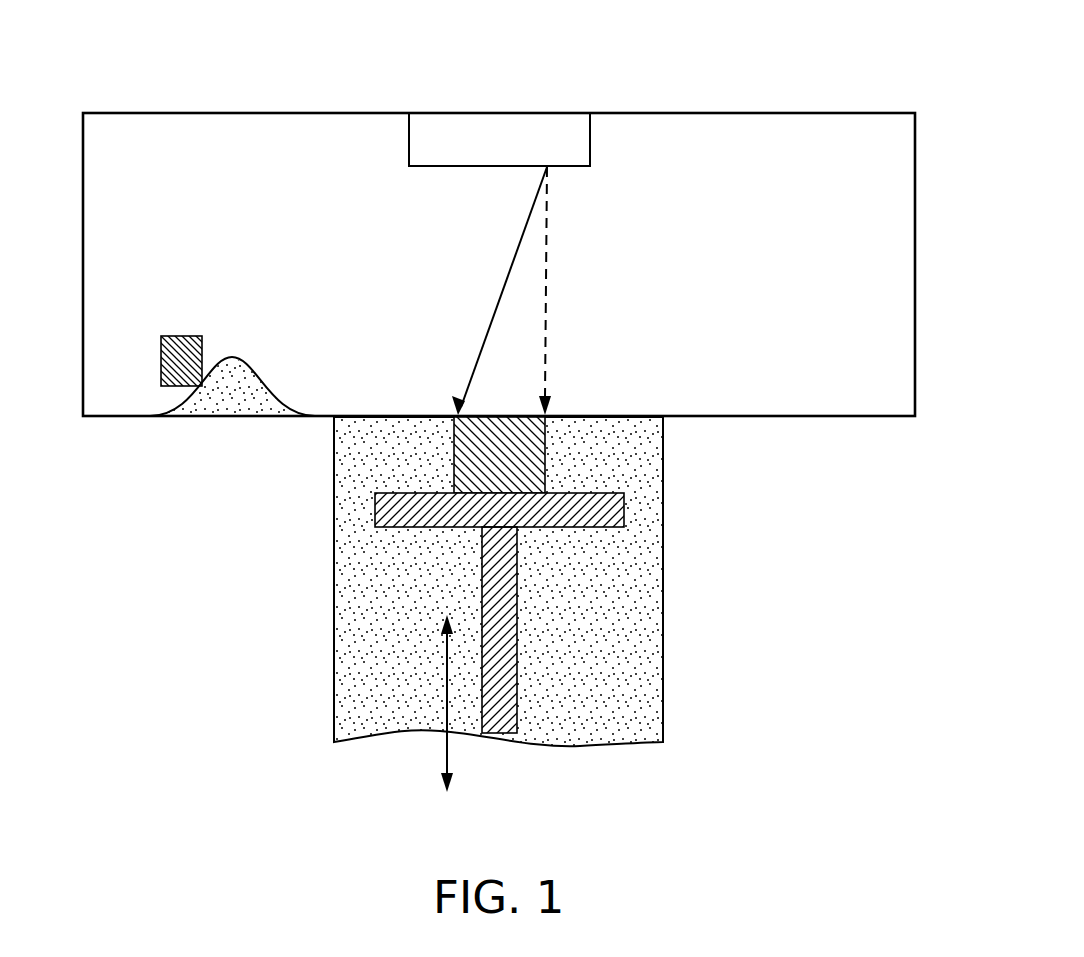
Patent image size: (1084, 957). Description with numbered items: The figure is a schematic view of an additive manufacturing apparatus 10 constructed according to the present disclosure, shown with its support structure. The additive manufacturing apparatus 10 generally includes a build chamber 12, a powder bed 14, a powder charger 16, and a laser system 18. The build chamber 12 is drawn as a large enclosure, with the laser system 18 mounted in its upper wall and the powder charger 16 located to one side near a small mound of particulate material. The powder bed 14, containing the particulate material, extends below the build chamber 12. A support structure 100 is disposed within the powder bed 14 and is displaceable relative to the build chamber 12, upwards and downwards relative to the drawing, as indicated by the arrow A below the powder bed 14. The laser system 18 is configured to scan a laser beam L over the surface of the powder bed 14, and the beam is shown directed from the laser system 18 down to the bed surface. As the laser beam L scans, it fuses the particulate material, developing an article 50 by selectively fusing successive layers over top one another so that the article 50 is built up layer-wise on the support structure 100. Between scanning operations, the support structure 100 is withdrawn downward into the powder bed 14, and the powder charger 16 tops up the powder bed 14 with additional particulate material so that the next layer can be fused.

The additive manufacturing apparatus 10 is at (183, 583).
The build chamber 12 is at (765, 277).
The powder bed 14 is at (608, 639).
The powder charger 16 is at (180, 353).
The laser system 18 is at (514, 136).
The article 50 is at (455, 445).
The support structure 100 is at (608, 513).
The laser beam L is at (492, 308).
The arrow A is at (447, 752).